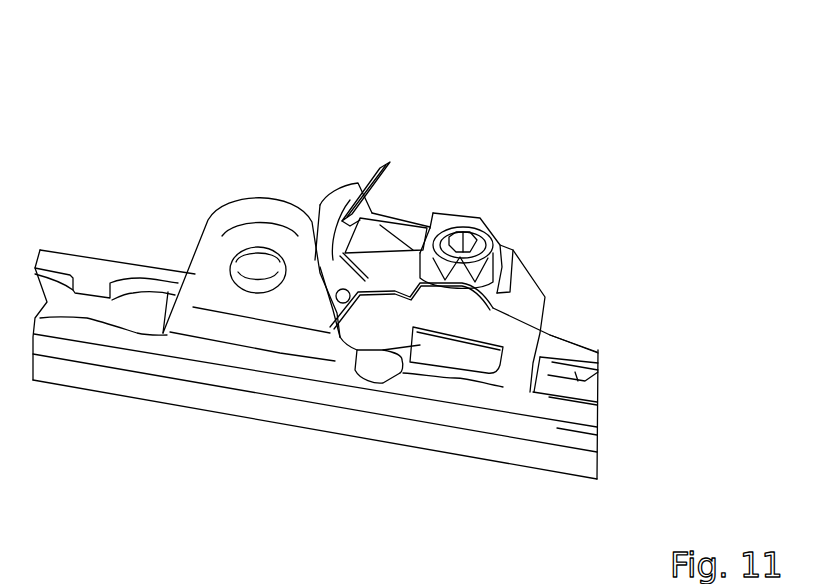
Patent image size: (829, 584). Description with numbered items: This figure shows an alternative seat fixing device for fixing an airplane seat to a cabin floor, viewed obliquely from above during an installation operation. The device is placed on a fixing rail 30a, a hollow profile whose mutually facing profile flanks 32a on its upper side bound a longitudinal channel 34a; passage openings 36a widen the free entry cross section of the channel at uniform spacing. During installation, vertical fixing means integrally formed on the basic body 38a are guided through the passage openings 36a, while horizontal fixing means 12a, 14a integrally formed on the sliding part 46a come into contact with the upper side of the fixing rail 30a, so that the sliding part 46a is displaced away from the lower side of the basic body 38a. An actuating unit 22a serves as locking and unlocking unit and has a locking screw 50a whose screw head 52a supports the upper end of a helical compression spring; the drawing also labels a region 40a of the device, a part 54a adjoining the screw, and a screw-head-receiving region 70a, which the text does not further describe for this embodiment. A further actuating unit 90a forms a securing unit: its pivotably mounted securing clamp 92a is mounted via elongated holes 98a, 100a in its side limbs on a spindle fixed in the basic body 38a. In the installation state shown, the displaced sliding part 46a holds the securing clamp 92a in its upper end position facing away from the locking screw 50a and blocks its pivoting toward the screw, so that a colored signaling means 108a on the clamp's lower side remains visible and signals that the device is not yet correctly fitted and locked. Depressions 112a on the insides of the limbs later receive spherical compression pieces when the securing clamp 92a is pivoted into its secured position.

The horizontal fixing means 12a is at (380, 367).
The horizontal fixing means 14a is at (505, 385).
The actuating unit 22a is at (458, 196).
The fixing rail 30a is at (582, 337).
The profile flank 32a is at (567, 407).
The longitudinal channel 34a is at (579, 389).
The passage opening 36a is at (545, 347).
The basic body 38a is at (247, 202).
The mounting bracket 40a is at (258, 247).
The sliding part 46a is at (516, 268).
The locking screw 50a is at (523, 237).
The screw head 52a is at (468, 235).
The threaded cylinder 54a is at (489, 260).
The channel 70a is at (495, 292).
The actuating unit 90a is at (373, 158).
The securing clamp 92a is at (347, 232).
The elongated hole 98a is at (330, 300).
The elongated hole 100a is at (378, 240).
The signaling means 108a is at (258, 190).
The depression 112a is at (400, 237).